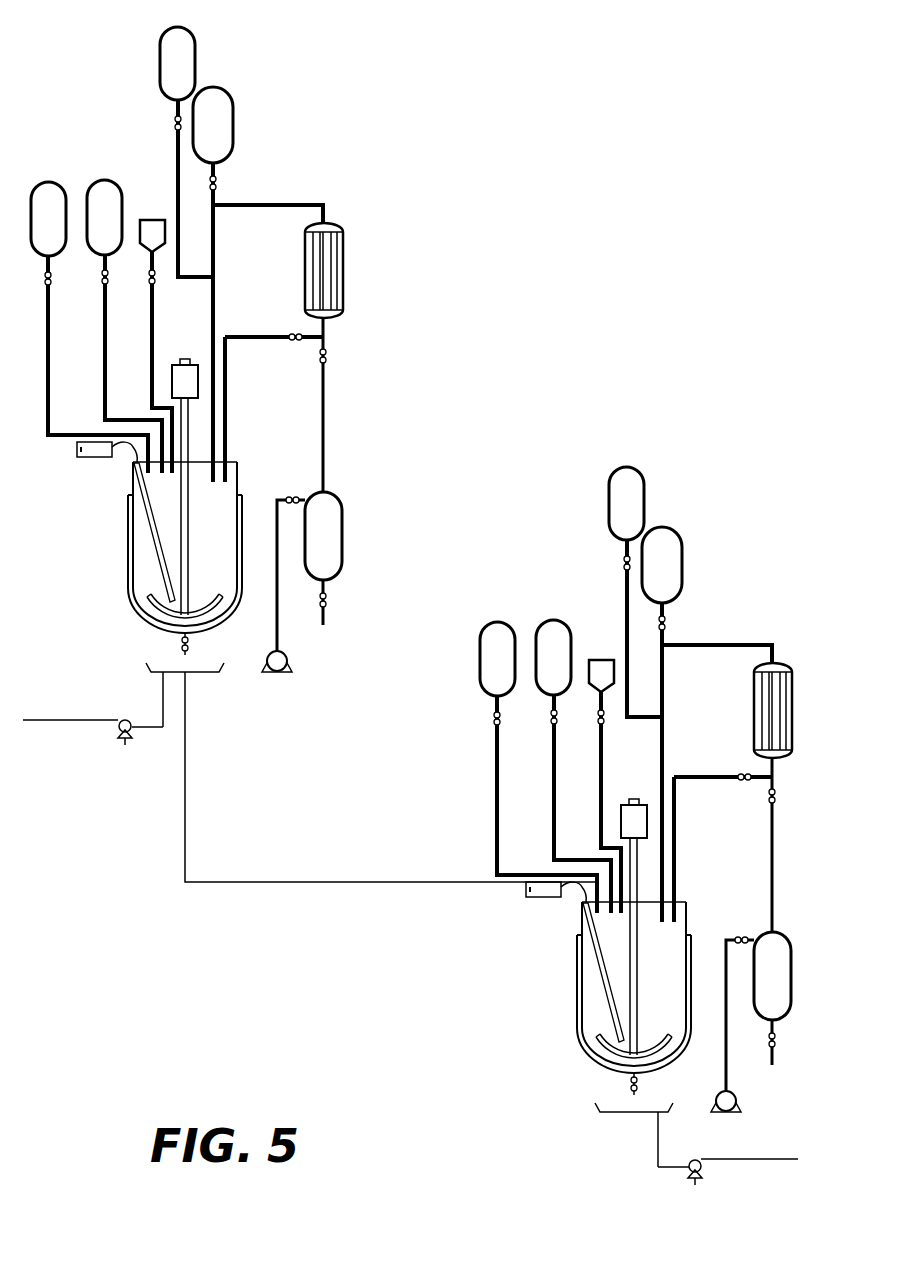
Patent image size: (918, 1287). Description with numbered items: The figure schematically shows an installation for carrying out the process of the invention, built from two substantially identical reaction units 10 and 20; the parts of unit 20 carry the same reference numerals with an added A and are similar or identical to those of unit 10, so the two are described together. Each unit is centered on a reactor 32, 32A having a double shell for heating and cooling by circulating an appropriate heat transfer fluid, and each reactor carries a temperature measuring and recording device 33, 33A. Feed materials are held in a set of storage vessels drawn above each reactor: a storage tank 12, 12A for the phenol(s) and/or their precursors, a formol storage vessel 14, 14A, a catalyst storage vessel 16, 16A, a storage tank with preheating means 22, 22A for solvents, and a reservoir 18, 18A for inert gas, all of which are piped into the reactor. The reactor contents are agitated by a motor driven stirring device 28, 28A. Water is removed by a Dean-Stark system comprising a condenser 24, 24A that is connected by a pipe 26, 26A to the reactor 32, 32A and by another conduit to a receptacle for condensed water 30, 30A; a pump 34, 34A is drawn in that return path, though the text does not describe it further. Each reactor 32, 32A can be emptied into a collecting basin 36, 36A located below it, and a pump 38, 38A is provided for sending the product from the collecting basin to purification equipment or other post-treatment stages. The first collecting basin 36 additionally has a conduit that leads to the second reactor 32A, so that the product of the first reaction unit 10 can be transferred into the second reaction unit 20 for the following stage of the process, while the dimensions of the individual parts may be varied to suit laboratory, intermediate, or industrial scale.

The reaction unit 10 is at (97, 533).
The storage tank 12 is at (48, 190).
The formol storage vessel 14 is at (105, 187).
The catalyst storage vessel 16 is at (155, 228).
The reservoir for inert gas 18 is at (183, 50).
The storage tank with preheating means 22 is at (222, 98).
The condenser 24 is at (340, 256).
The pipe 26 is at (266, 336).
The motor driven stirring device 28 is at (188, 380).
The receptacle for condensed water 30 is at (331, 531).
The reactor 32 is at (137, 605).
The temperature measuring and recording device 33 is at (102, 450).
The pump 34 is at (283, 661).
The collecting basin 36 is at (200, 672).
The pump 38 is at (125, 746).
The reaction unit 20 is at (573, 998).
The storage tank 12A is at (538, 752).
The formol storage vessel 14A is at (573, 745).
The catalyst storage vessel 16A is at (615, 762).
The reservoir for inert gas 18A is at (663, 592).
The storage tank with preheating means 22A is at (696, 722).
The condenser 24A is at (760, 788).
The pipe 26A is at (723, 825).
The motor driven stirring device 28A is at (678, 927).
The receptacle for condensed water 30A is at (808, 998).
The reactor 32A is at (597, 1051).
The temperature measuring and recording device 33A is at (550, 909).
The pump of second reactor 34A is at (757, 1027).
The collecting basin 36A is at (631, 1135).
The pump 38A is at (728, 1190).